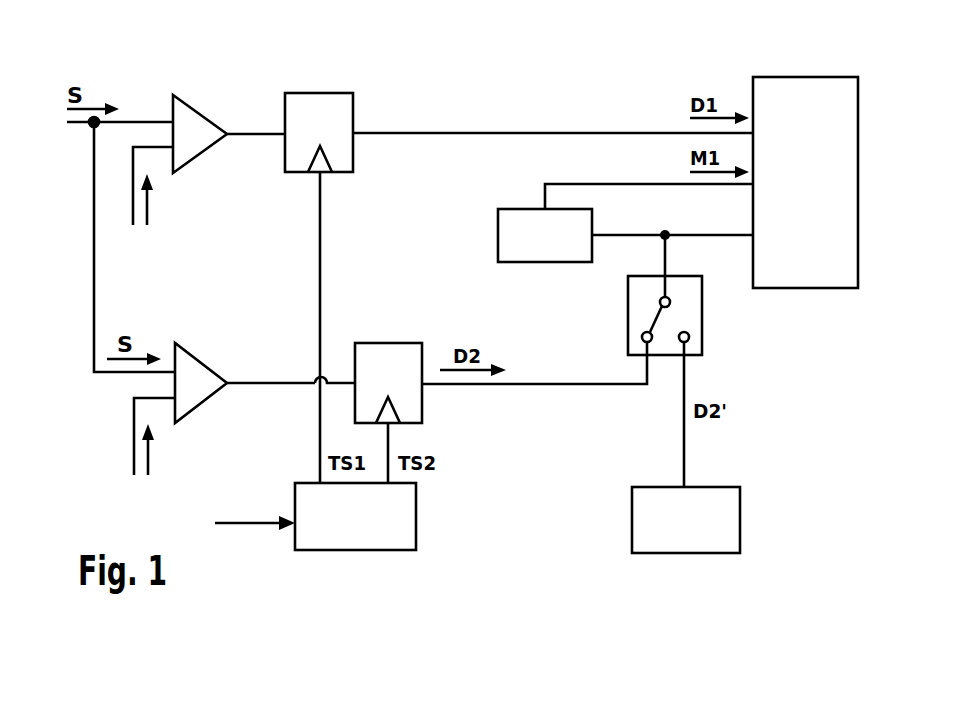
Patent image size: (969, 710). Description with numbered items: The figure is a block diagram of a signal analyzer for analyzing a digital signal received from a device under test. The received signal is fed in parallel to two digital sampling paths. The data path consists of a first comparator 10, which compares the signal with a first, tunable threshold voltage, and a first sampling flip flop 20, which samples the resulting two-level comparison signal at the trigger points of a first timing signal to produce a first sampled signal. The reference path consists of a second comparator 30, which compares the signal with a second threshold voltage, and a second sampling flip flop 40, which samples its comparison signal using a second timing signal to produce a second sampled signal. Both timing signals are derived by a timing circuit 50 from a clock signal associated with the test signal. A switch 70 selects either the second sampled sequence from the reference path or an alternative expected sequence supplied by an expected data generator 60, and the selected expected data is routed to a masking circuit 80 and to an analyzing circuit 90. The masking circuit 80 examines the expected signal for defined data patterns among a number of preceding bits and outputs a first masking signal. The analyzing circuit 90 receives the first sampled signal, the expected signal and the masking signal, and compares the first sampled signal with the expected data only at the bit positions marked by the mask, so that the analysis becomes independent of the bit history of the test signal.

The first comparator 10 is at (198, 108).
The first sampling flip flop 20 is at (353, 110).
The second comparator 30 is at (200, 358).
The second sampling flip flop 40 is at (388, 343).
The timing circuit 50 is at (416, 512).
The expected data generator 60 is at (740, 517).
The switch 70 is at (702, 318).
The masking circuit 80 is at (498, 238).
The analyzing circuit 90 is at (836, 288).